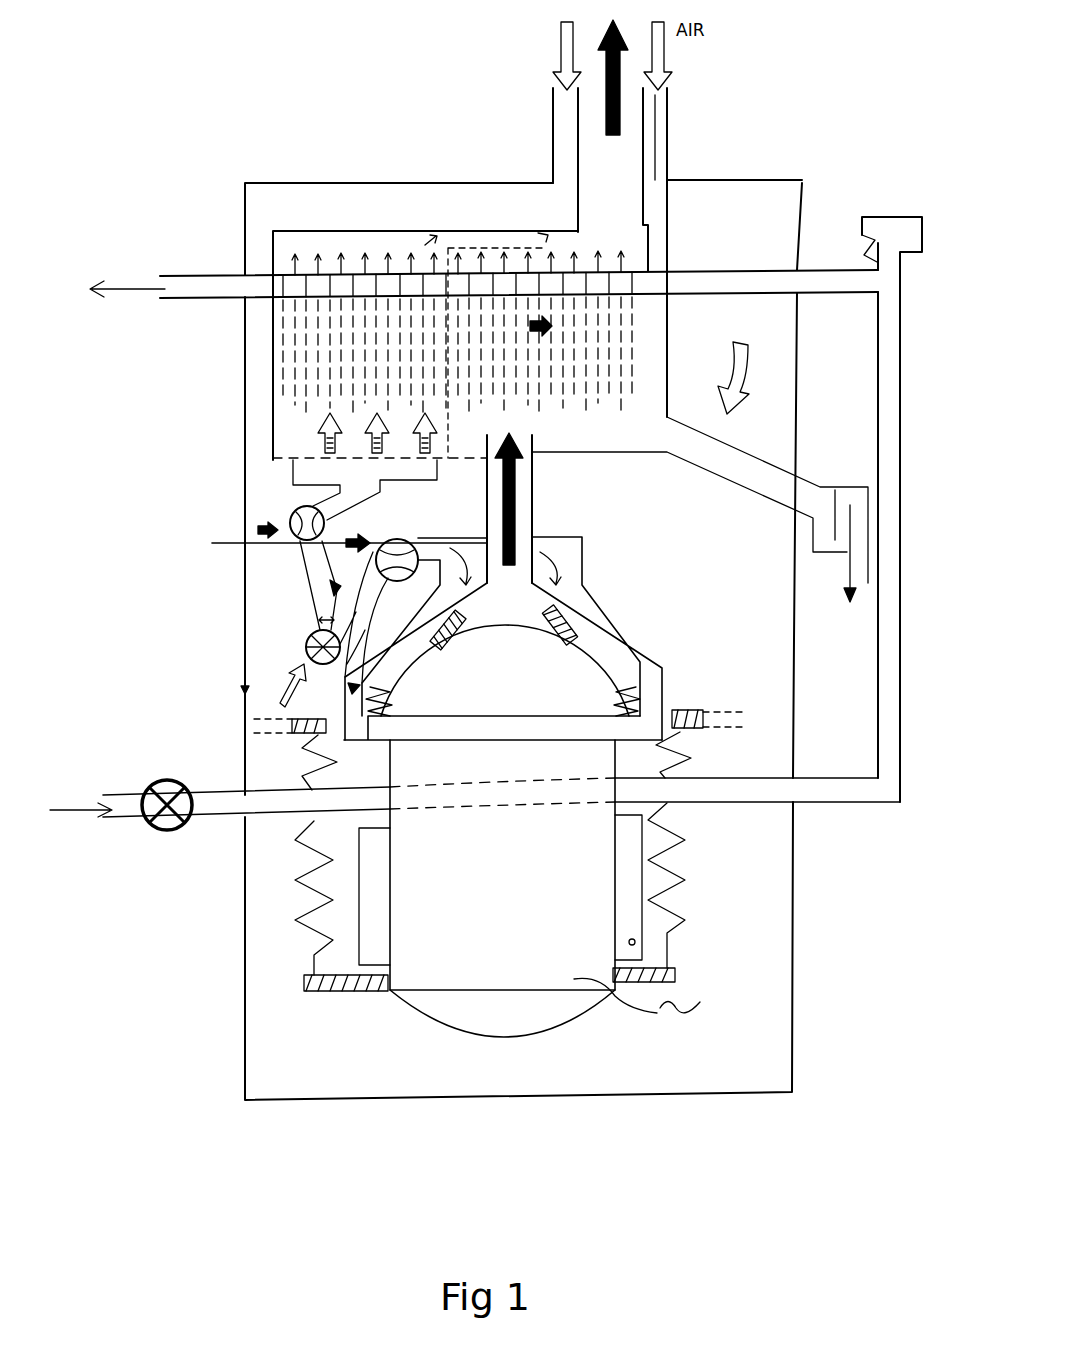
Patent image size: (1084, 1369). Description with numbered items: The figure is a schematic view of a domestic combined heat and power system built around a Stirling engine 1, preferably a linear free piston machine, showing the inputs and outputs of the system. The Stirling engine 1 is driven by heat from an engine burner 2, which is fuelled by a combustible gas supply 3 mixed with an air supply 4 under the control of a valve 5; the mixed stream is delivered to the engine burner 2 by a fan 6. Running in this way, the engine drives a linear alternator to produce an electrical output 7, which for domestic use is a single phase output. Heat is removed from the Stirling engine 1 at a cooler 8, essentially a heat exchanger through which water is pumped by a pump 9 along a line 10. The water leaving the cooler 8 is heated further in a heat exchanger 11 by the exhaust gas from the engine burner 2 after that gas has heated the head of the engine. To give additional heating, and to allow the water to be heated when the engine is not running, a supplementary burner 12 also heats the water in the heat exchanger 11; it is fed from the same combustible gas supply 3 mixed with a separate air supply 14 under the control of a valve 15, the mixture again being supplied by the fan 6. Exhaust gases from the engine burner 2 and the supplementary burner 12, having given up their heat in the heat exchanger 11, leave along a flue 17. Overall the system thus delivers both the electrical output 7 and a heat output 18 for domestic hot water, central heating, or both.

The Stirling engine 1 is at (415, 978).
The engine burner 2 is at (640, 692).
The combustible gas supply 3 is at (220, 547).
The air supply 4 is at (371, 596).
The valve 5 is at (399, 540).
The fan 6 is at (303, 643).
The electrical output 7 is at (600, 990).
The cooler 8 is at (583, 796).
The pump 9 is at (152, 823).
The line 10 is at (217, 820).
The heat exchanger 11 is at (370, 245).
The supplementary burner 12 is at (310, 464).
The air supply 14 is at (310, 575).
The valve 15 is at (292, 518).
The flue 17 is at (648, 152).
The heat output 18 is at (175, 268).